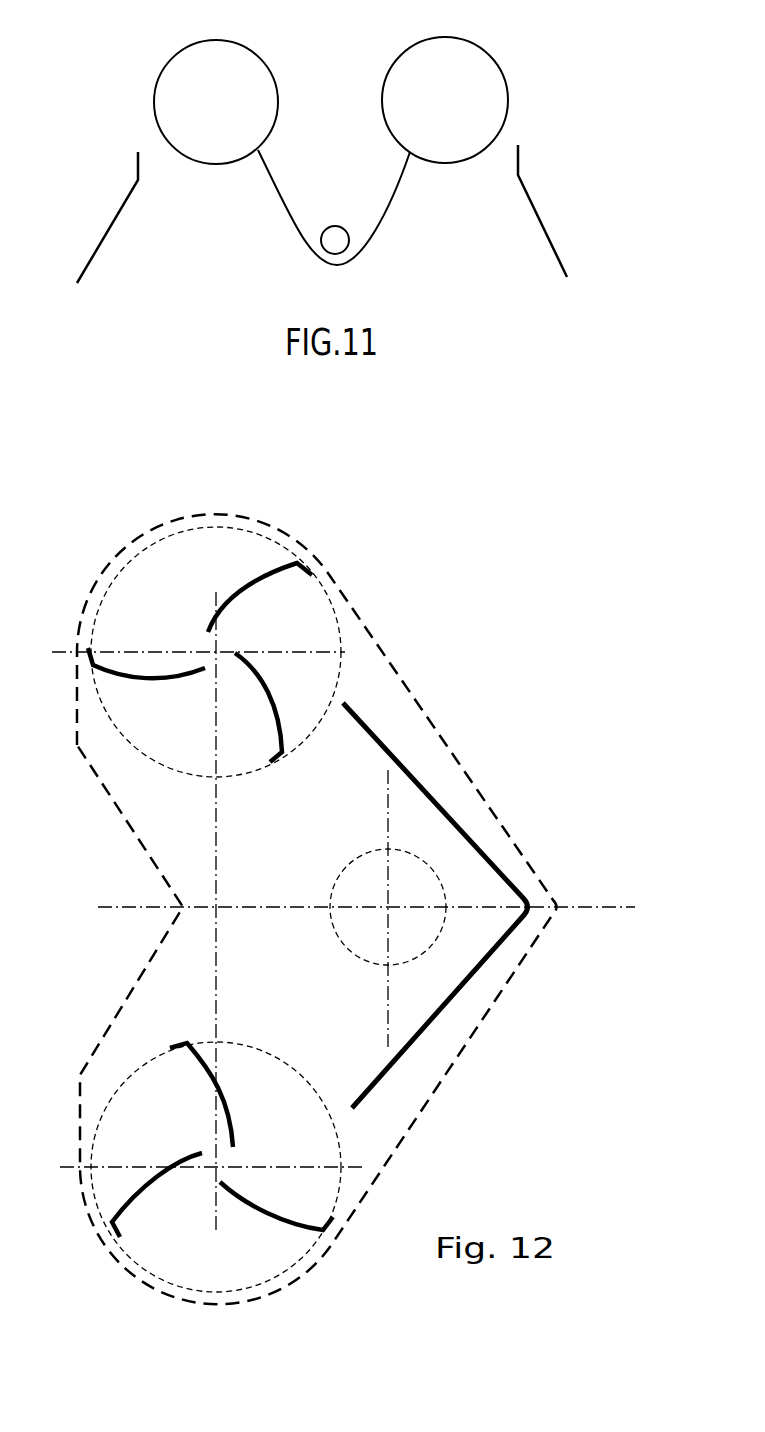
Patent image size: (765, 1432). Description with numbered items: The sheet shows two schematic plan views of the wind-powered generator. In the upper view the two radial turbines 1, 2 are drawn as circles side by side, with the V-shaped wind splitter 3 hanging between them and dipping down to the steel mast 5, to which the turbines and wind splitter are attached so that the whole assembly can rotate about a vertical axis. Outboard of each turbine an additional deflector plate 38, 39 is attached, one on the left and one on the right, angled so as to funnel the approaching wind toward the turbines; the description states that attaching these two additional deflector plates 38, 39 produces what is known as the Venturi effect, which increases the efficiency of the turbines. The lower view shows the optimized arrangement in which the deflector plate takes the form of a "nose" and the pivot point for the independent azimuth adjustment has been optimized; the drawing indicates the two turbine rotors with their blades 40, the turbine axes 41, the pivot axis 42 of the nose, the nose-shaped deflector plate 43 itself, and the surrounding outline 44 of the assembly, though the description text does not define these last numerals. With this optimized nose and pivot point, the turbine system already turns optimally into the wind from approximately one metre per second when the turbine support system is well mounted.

In FIG. 11, the radial turbine 1 is at (203, 80).
In FIG. 11, the radial turbine 2 is at (460, 77).
In FIG. 11, the V-shaped wind splitter 3 is at (283, 217).
In FIG. 11, the steel mast 5 is at (337, 240).
In FIG. 11, the deflector plate 38 is at (112, 227).
In FIG. 11, the deflector plate 39 is at (557, 247).
In FIG. 12, the impeller blades 40 is at (275, 570).
In FIG. 12, the rotation axis 41 is at (219, 1162).
In FIG. 12, the pivot axis 42 is at (389, 906).
In FIG. 12, the deflector wall 43 is at (491, 850).
In FIG. 12, the housing envelope 44 is at (146, 846).